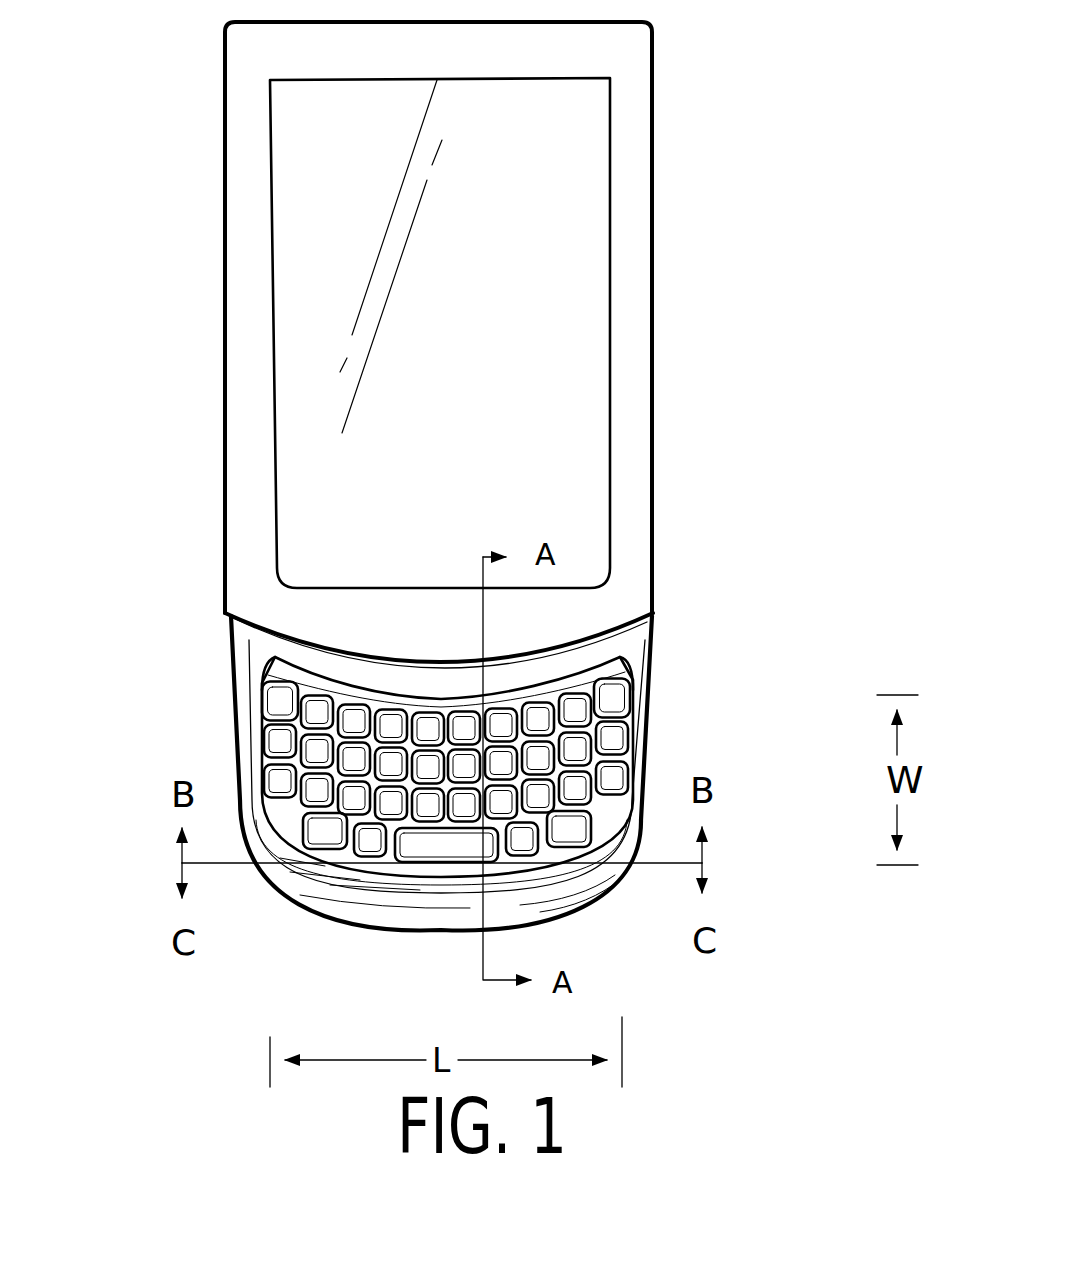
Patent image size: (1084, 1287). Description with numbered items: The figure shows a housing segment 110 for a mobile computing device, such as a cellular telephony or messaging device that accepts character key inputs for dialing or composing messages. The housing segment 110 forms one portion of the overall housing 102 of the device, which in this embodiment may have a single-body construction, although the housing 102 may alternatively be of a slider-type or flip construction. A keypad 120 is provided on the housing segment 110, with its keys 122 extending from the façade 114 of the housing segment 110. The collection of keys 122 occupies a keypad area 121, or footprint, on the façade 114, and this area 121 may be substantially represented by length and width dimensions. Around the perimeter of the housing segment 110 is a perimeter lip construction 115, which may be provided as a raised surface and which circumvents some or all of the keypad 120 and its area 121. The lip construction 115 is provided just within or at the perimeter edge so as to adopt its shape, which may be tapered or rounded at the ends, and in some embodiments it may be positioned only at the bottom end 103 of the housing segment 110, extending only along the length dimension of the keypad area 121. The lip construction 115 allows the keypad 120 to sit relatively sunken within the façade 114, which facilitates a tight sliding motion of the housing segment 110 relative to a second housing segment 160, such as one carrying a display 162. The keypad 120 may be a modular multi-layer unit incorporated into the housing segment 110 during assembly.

The housing 102 is at (149, 863).
The bottom end 103 is at (565, 918).
The housing segment 110 is at (665, 645).
The façade 114 is at (285, 822).
The perimeter lip construction 115 is at (414, 905).
The keypad 120 is at (603, 814).
The keypad area 121 is at (482, 690).
The keys 122 is at (282, 746).
The second housing segment 160 is at (694, 405).
The display 162 is at (227, 393).